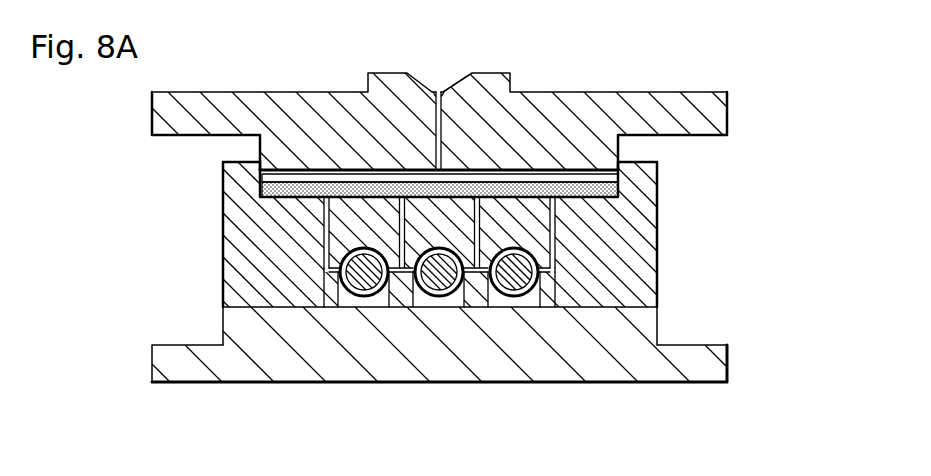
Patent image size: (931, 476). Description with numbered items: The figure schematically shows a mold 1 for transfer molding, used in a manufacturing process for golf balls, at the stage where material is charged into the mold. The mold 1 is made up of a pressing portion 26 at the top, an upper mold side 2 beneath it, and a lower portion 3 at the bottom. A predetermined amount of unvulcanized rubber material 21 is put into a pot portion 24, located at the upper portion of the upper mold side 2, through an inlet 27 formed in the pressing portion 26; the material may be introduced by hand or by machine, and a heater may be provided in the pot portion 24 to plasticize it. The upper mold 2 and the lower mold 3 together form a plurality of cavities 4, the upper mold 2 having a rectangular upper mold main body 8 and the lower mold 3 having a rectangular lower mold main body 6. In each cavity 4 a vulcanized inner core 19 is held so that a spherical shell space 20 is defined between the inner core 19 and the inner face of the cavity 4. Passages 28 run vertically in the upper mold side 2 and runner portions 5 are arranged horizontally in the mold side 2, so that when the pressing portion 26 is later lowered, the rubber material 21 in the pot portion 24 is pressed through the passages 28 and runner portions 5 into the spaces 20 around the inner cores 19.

The mold 1 is at (673, 63).
The upper mold side 2 is at (442, 234).
The lower portion 3 is at (444, 330).
The cavity 4 is at (481, 243).
The runner portion 5 is at (548, 292).
The lower mold main body 6 is at (190, 357).
The upper mold main body 8 is at (230, 238).
The inner core 19 is at (498, 295).
The spherical shell space 20 is at (493, 254).
The unvulcanized rubber material 21 is at (260, 188).
The pot portion 24 is at (619, 178).
The pressing portion 26 is at (547, 110).
The inlet 27 is at (440, 91).
The passage 28 is at (558, 228).